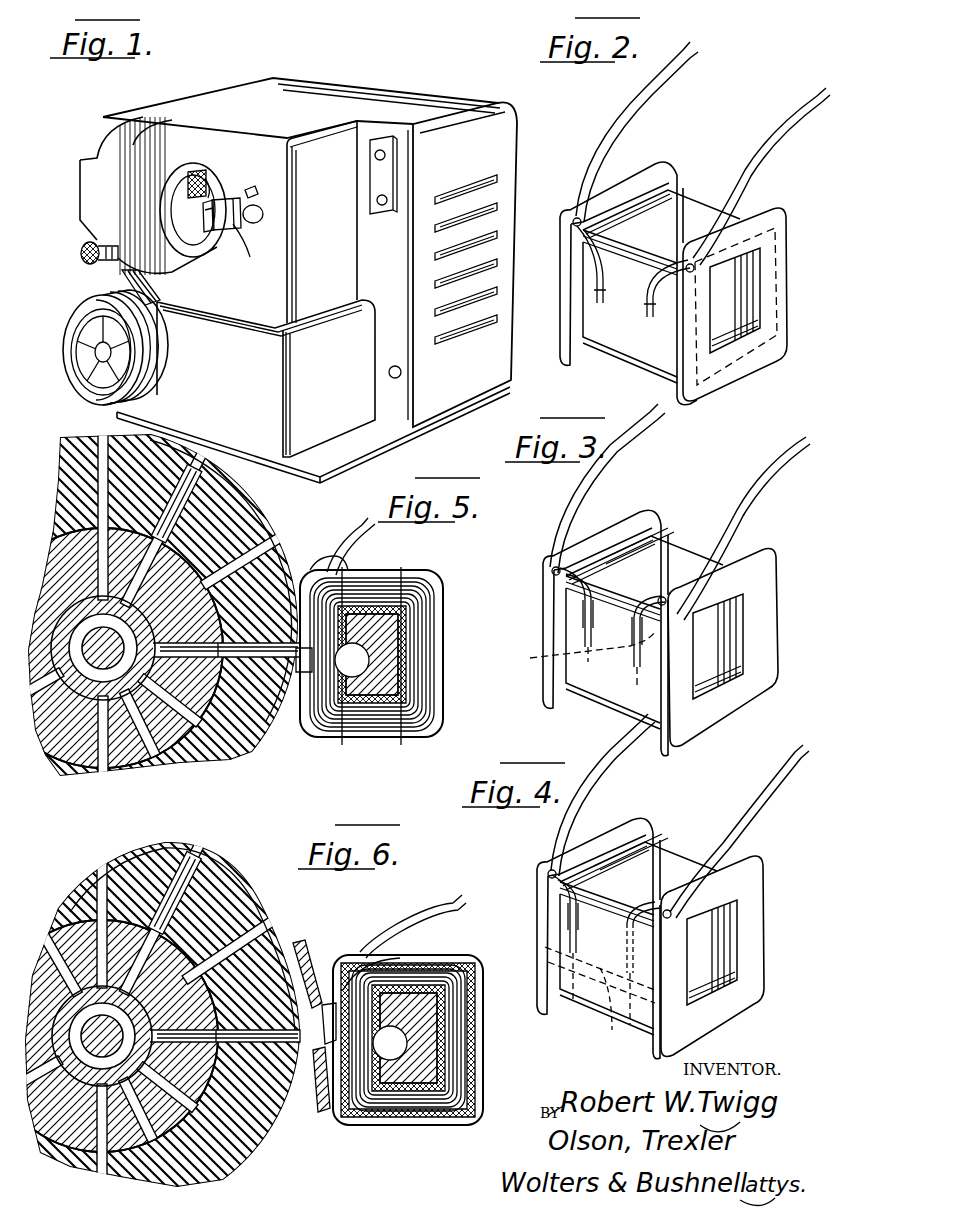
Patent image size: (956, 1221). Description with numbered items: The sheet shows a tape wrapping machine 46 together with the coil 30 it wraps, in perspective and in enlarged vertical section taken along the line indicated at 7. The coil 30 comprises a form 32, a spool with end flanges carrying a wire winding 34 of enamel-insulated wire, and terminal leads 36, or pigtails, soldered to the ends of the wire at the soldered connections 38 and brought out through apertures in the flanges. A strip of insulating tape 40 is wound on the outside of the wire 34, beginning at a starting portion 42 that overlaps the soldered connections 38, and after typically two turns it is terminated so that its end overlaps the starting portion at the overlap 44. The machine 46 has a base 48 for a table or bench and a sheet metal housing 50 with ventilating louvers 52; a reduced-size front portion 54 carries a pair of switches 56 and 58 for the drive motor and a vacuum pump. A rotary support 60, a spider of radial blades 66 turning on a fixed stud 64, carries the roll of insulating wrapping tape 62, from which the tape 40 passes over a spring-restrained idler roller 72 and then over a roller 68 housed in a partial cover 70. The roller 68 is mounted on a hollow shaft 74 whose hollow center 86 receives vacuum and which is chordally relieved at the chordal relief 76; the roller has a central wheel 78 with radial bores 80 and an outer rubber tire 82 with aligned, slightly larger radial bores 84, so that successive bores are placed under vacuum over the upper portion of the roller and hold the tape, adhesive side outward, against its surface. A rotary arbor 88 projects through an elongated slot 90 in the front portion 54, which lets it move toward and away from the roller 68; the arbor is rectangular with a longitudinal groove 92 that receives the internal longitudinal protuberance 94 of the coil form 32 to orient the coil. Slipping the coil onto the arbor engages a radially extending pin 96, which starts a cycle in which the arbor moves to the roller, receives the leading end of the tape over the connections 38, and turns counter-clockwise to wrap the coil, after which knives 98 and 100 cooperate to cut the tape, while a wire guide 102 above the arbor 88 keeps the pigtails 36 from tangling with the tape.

In FIG. 1, the section line 7 is at (356, 82).
In FIG. 2, the coil 30 is at (662, 158).
In FIG. 3, the coil 30 is at (654, 506).
In FIG. 4, the coil 30 is at (646, 820).
In FIG. 6, the coil 30 is at (462, 1134).
In FIG. 2, the form 32 is at (606, 200).
In FIG. 3, the form 32 is at (660, 633).
In FIG. 4, the form 32 is at (650, 938).
In FIG. 5, the form 32 is at (446, 633).
In FIG. 6, the form 32 is at (470, 1106).
In FIG. 5, the wire winding 34 is at (422, 693).
In FIG. 6, the wire winding 34 is at (470, 1031).
In FIG. 2, the terminal leads 36 is at (628, 107).
In FIG. 3, the terminal leads 36 is at (740, 525).
In FIG. 4, the terminal leads 36 is at (548, 842).
In FIG. 5, the terminal leads 36 is at (332, 553).
In FIG. 6, the terminal leads 36 is at (408, 918).
In FIG. 2, the soldered connections 38 is at (646, 310).
In FIG. 3, the soldered connections 38 is at (578, 660).
In FIG. 4, the soldered connections 38 is at (568, 944).
In FIG. 1, the insulating tape 40 is at (80, 280).
In FIG. 3, the insulating tape 40 is at (672, 562).
In FIG. 4, the insulating tape 40 is at (668, 860).
In FIG. 5, the insulating tape 40 is at (72, 438).
In FIG. 6, the insulating tape 40 is at (236, 903).
In FIG. 3, the starting portion 42 is at (606, 682).
In FIG. 4, the starting portion 42 is at (613, 1030).
In FIG. 5, the starting portion 42 is at (272, 736).
In FIG. 6, the starting portion 42 is at (405, 958).
In FIG. 4, the overlap 44 is at (604, 938).
In FIG. 6, the overlap 44 is at (343, 991).
In FIG. 1, the machine 46 is at (424, 92).
In FIG. 1, the base 48 is at (395, 451).
In FIG. 1, the housing 50 is at (476, 110).
In FIG. 1, the ventilating louvers 52 is at (494, 208).
In FIG. 1, the front portion 54 is at (341, 161).
In FIG. 1, the switch 56 is at (386, 154).
In FIG. 1, the switch 58 is at (386, 200).
In FIG. 1, the rotary support 60 is at (85, 376).
In FIG. 1, the roll of insulating wrapping tape 62 is at (160, 370).
In FIG. 1, the fixed stud 64 is at (92, 352).
In FIG. 1, the blades 66 is at (85, 331).
In FIG. 1, the roller 68 is at (213, 193).
In FIG. 5, the roller 68 is at (290, 758).
In FIG. 6, the roller 68 is at (262, 1173).
In FIG. 1, the partial cover 70 is at (118, 152).
In FIG. 1, the idler roller 72 is at (84, 247).
In FIG. 5, the hollow shaft 74 is at (63, 680).
In FIG. 6, the hollow shaft 74 is at (130, 1046).
In FIG. 5, the chordal relief 76 is at (67, 594).
In FIG. 6, the chordal relief 76 is at (60, 937).
In FIG. 5, the central wheel 78 is at (173, 750).
In FIG. 6, the central wheel 78 is at (96, 879).
In FIG. 5, the radial bores 80 is at (148, 613).
In FIG. 6, the radial bores 80 is at (128, 1000).
In FIG. 5, the outer tire 82 is at (263, 525).
In FIG. 6, the outer tire 82 is at (213, 885).
In FIG. 5, the radial bores 84 is at (218, 501).
In FIG. 6, the radial bores 84 is at (157, 847).
In FIG. 5, the hollow center 86 is at (90, 672).
In FIG. 6, the hollow center 86 is at (40, 1149).
In FIG. 1, the rotary arbor 88 is at (250, 257).
In FIG. 5, the rotary arbor 88 is at (386, 689).
In FIG. 6, the rotary arbor 88 is at (408, 1038).
In FIG. 1, the elongated slot 90 is at (260, 226).
In FIG. 5, the longitudinal groove 92 is at (346, 573).
In FIG. 6, the longitudinal groove 92 is at (440, 993).
In FIG. 5, the internal longitudinal protuberance 94 is at (354, 720).
In FIG. 6, the internal longitudinal protuberance 94 is at (380, 1100).
In FIG. 1, the radially extending pin 96 is at (262, 211).
In FIG. 6, the knife 98 is at (318, 948).
In FIG. 6, the knife 100 is at (312, 1113).
In FIG. 1, the wire guide 102 is at (222, 187).